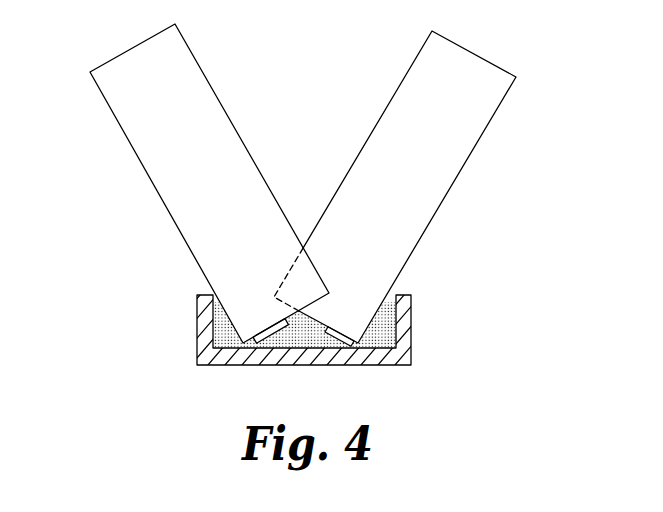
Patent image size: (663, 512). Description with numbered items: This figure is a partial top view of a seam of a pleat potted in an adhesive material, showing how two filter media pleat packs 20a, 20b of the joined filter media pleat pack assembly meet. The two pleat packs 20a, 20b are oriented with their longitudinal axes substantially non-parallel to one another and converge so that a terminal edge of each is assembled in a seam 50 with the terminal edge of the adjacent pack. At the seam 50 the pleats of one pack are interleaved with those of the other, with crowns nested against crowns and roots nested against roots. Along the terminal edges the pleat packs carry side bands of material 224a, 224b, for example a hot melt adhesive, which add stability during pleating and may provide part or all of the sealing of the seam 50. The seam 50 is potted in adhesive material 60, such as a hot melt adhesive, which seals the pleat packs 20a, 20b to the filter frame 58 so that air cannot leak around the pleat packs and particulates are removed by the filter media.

The filter media pleat pack 20a is at (117, 113).
The filter media pleat pack 20b is at (474, 146).
The filter frame 58 is at (403, 323).
The adhesive material 60 is at (287, 337).
The seam 50 is at (308, 318).
The side band of material 224a is at (283, 341).
The side band of material 224b is at (343, 345).